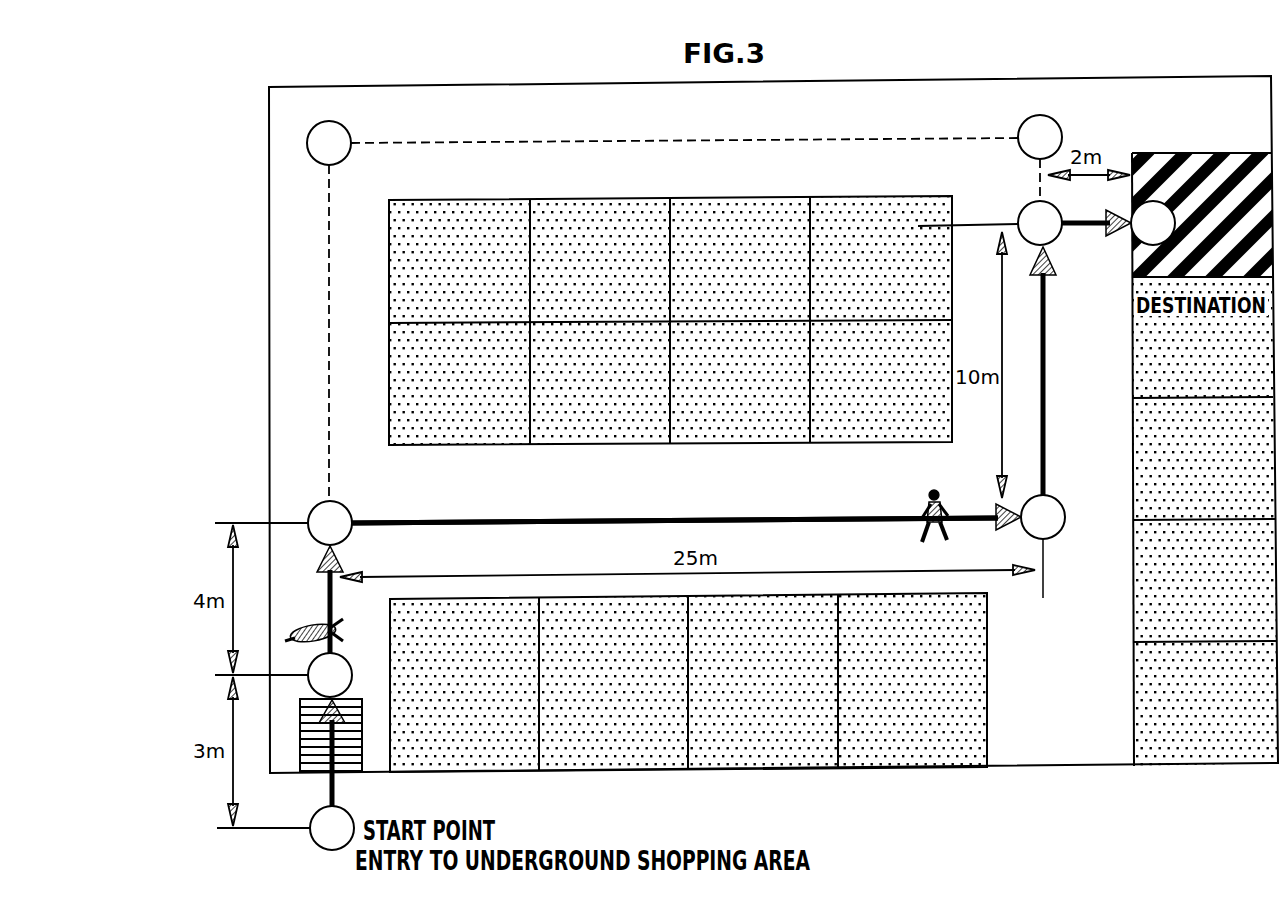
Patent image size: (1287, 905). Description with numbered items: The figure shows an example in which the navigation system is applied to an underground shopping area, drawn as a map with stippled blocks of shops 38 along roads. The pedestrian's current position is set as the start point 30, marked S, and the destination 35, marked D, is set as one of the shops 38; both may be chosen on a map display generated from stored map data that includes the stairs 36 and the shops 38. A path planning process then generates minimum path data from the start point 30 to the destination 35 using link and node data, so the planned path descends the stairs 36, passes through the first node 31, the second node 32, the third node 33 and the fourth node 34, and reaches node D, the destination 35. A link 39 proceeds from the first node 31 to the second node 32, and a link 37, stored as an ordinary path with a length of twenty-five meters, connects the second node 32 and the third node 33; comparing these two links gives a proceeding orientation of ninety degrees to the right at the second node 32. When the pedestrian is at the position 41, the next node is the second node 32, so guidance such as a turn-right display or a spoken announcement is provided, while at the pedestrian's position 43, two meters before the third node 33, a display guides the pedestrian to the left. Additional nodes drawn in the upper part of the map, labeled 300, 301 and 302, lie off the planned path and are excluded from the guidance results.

The start point 30 is at (308, 841).
The node 1 31 is at (343, 653).
The node 2 32 is at (348, 510).
The node 3 33 is at (1059, 500).
The node 4 34 is at (1020, 213).
The destination 35 is at (1137, 238).
The stairs 36 is at (362, 740).
The link 37 is at (578, 521).
The shops 38 is at (857, 733).
The link 39 is at (312, 628).
The position 41 is at (311, 622).
The pedestrian's position 43 is at (914, 500).
The node 5 300 is at (351, 132).
The dashed alternative route 301 is at (497, 143).
The node 6 302 is at (1062, 133).